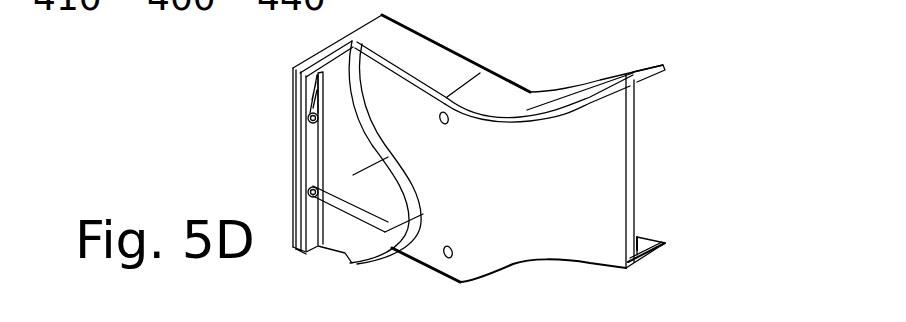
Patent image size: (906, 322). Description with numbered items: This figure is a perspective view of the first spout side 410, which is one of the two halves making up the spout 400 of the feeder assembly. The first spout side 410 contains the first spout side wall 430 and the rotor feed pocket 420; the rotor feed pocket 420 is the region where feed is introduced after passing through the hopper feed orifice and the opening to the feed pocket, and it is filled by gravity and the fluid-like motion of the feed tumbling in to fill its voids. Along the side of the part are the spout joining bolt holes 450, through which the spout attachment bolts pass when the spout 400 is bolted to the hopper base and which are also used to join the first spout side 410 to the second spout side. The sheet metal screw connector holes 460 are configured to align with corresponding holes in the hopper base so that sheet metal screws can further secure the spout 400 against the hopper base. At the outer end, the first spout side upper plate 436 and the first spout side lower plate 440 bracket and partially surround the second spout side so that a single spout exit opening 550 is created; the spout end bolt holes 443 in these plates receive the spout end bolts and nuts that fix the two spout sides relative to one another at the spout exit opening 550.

The spout 400 is at (667, 240).
The first spout side 410 is at (407, 48).
The rotor feed pocket 420 is at (340, 246).
The first spout side wall 430 is at (584, 252).
The first spout side upper plate 436 is at (663, 68).
The first spout side lower plate 440 is at (668, 248).
The spout end bolt holes 443 is at (636, 78).
The spout joining bolt holes 450 is at (446, 124).
The sheet metal screw connector holes 460 is at (297, 183).
The spout exit opening 550 is at (648, 142).